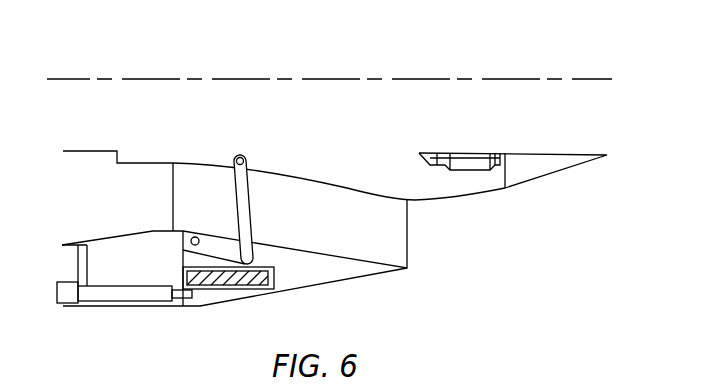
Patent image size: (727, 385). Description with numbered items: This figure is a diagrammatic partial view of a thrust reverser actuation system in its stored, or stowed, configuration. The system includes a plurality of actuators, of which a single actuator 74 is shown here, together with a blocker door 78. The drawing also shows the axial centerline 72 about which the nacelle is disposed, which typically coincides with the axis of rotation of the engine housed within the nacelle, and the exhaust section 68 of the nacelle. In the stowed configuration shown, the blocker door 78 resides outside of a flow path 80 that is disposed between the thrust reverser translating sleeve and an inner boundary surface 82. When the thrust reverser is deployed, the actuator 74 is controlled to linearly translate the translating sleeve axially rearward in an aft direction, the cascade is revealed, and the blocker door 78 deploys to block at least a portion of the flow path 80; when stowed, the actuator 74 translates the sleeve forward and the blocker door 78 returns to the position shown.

The axial centerline 72 is at (582, 79).
The exhaust section 68 is at (523, 180).
The flow path 80 is at (352, 232).
The inner boundary surface 82 is at (318, 185).
The blocker door 78 is at (220, 245).
The actuator 74 is at (151, 292).